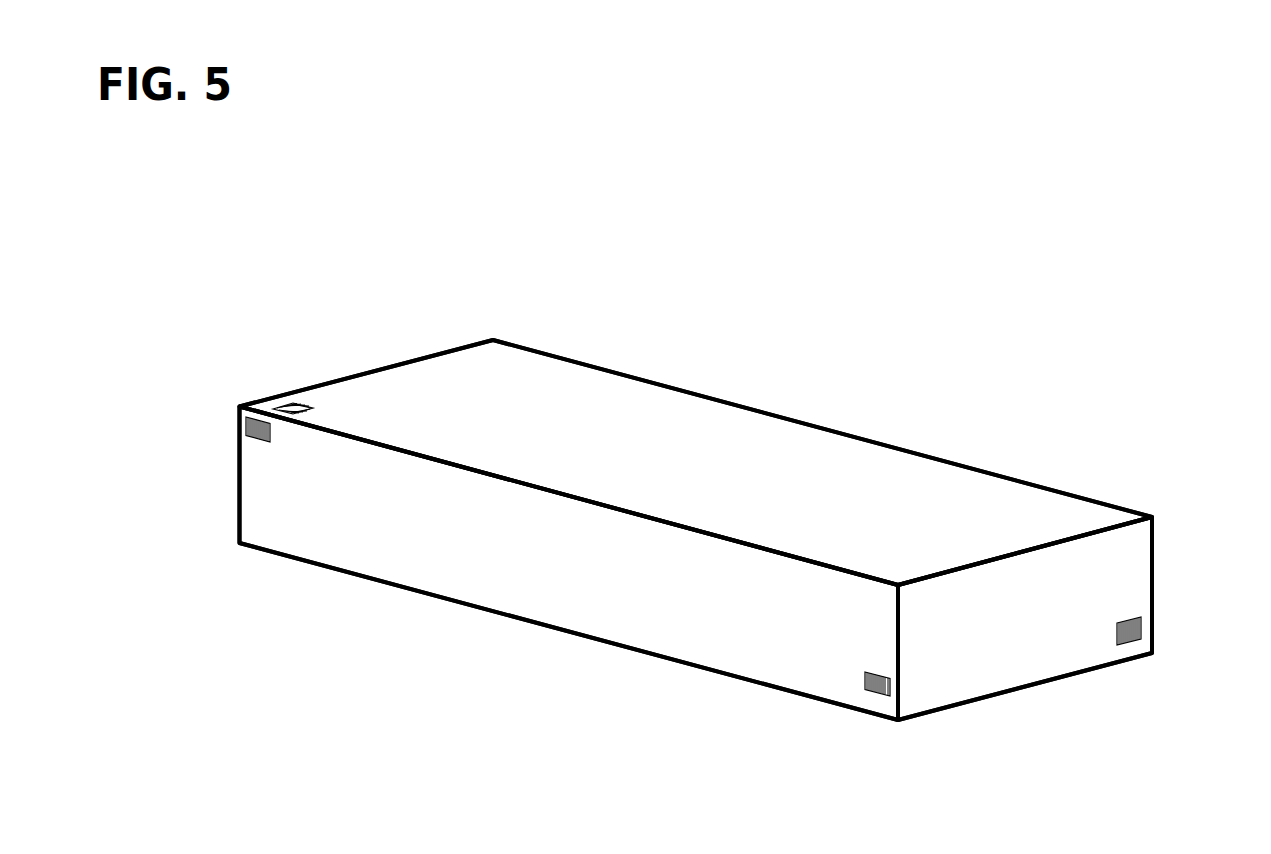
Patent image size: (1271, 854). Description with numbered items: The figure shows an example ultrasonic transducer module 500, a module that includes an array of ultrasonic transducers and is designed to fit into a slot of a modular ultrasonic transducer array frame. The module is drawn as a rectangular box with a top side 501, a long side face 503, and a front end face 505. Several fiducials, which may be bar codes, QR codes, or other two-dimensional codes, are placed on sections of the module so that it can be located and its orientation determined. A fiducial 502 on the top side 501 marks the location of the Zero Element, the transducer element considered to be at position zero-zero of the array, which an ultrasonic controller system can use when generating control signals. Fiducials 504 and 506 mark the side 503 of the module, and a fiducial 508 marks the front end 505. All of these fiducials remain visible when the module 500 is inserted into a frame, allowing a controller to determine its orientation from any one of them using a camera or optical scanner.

The ultrasonic transducer module 500 is at (373, 332).
The top side 501 is at (683, 435).
The fiducial 502 is at (278, 397).
The front side surface 503 is at (390, 542).
The fiducial 504 is at (242, 432).
The right side surface 505 is at (1140, 572).
The fiducial 506 is at (857, 687).
The fiducial 508 is at (1126, 643).